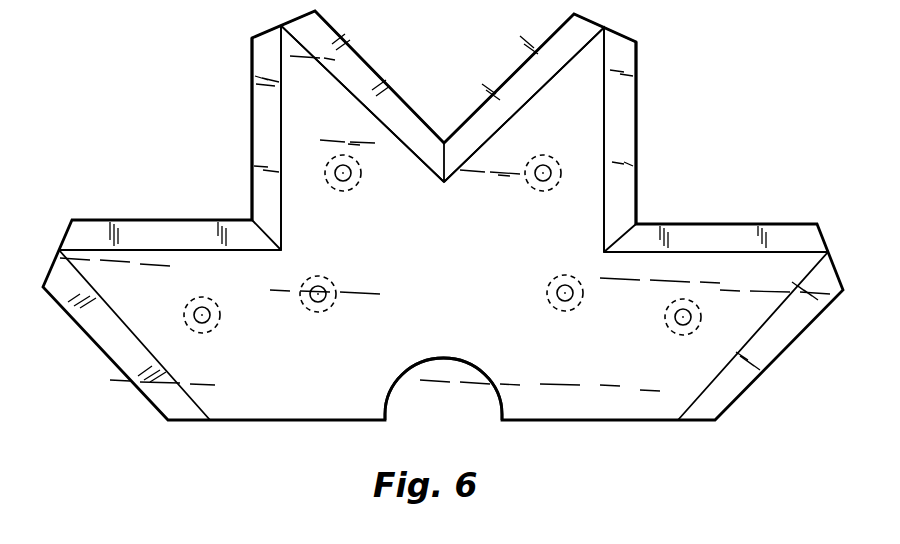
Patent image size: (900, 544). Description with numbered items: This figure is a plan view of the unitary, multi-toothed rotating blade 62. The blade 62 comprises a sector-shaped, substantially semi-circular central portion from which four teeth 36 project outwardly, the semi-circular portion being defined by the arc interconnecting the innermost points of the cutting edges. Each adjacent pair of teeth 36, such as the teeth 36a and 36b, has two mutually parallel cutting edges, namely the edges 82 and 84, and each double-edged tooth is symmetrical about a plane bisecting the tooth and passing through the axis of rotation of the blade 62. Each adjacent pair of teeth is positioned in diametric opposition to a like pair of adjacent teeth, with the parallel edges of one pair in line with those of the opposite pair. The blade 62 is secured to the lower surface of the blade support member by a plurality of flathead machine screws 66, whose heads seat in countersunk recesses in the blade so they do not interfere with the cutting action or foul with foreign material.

The teeth 36 is at (59, 250).
The tooth 36a is at (343, 122).
The tooth 36b is at (590, 122).
The blade 62 is at (448, 277).
The flathead machine screws 66 is at (310, 294).
The cutting edge 82 is at (251, 116).
The cutting edge 84 is at (637, 118).